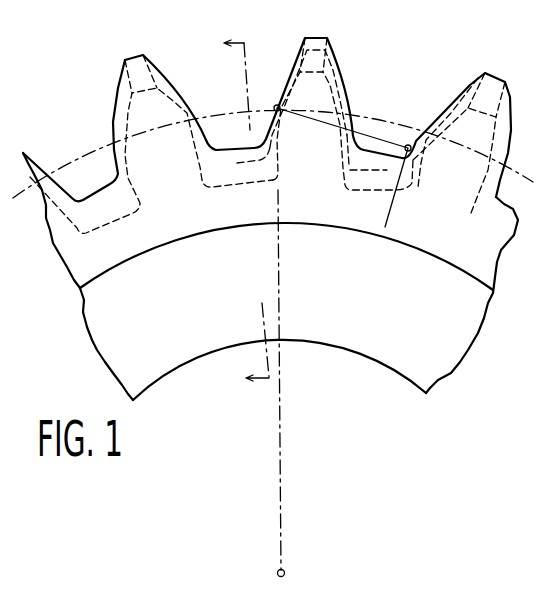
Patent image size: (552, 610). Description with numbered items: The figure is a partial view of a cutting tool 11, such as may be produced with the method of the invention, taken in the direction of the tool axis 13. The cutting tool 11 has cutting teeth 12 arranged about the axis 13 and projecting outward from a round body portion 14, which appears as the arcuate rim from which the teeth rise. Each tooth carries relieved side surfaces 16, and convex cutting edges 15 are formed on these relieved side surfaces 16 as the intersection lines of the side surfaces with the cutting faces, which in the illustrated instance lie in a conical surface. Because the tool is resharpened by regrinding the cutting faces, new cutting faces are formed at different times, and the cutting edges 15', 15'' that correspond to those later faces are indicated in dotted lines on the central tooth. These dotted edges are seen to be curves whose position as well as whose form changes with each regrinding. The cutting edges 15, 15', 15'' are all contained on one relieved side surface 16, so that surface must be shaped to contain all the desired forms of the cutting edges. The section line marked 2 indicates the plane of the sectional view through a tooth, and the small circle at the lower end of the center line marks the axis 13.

The cutting tool 11 is at (105, 325).
The cutting teeth 12 is at (158, 106).
The axis 13 is at (283, 567).
The round body portion 14 is at (78, 265).
The convex cutting edges 15 is at (295, 125).
The cutting edge 15' is at (329, 98).
The cutting edge 15'' is at (343, 114).
The relieved side surfaces 16 is at (113, 118).
The section line 2- 2 is at (246, 211).